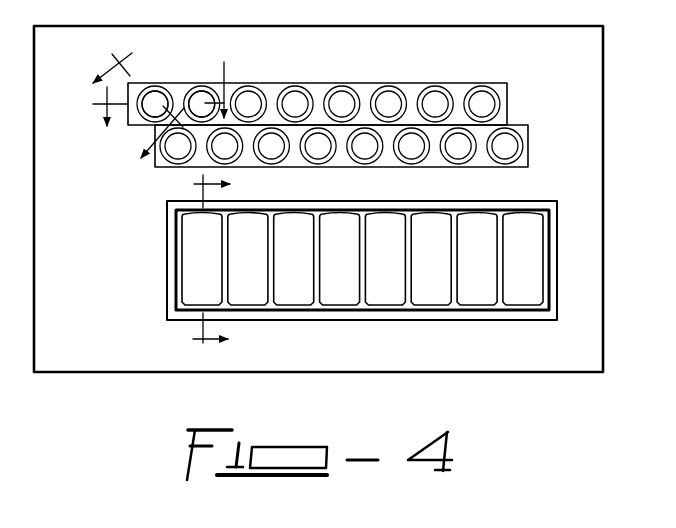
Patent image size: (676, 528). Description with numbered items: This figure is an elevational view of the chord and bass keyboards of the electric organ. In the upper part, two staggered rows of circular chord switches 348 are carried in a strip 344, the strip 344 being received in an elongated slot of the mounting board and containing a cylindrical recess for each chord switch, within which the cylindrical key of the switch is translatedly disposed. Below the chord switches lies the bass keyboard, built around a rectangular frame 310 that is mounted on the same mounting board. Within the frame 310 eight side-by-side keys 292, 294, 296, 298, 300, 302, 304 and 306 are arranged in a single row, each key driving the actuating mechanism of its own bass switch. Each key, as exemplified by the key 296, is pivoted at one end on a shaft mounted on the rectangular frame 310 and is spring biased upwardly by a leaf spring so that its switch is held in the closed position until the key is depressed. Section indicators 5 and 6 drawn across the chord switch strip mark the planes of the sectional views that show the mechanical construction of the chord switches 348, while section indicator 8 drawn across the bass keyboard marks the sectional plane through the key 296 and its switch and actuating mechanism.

The strip 344 is at (363, 90).
The chord switches 348 is at (164, 91).
The rectangular frame 310 is at (377, 318).
The key 296 is at (193, 270).
The key 306 is at (257, 270).
The key 300 is at (303, 270).
The key 292 is at (349, 270).
The key 302 is at (376, 270).
The key 294 is at (422, 270).
The key 304 is at (468, 270).
The key 298 is at (514, 270).
The section line 5- 5 is at (163, 93).
The section line 6- 6 is at (129, 113).
The section line 8- 8 is at (223, 263).